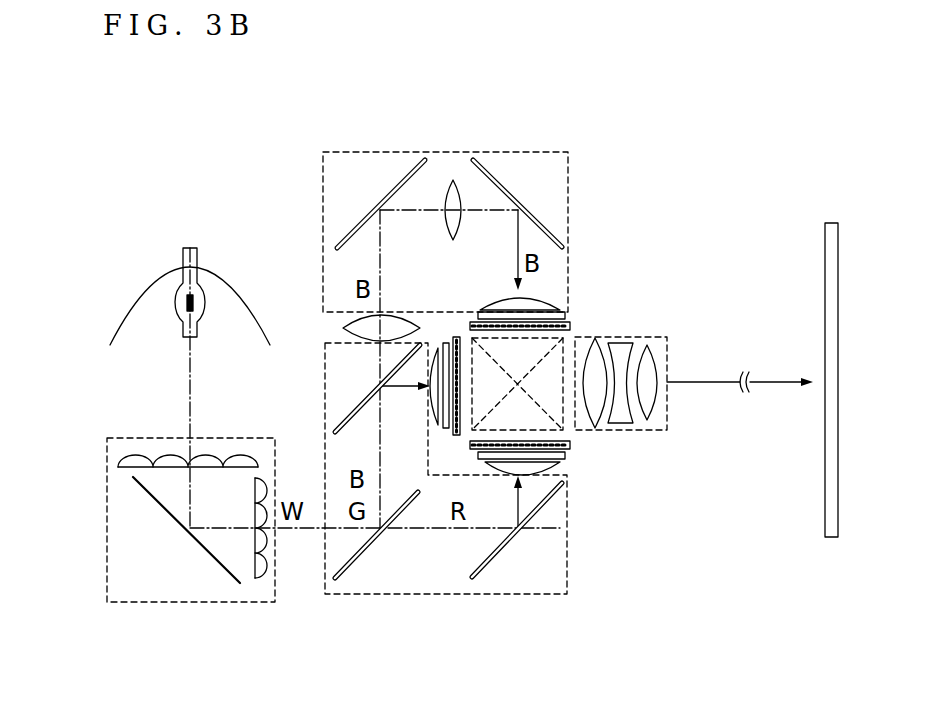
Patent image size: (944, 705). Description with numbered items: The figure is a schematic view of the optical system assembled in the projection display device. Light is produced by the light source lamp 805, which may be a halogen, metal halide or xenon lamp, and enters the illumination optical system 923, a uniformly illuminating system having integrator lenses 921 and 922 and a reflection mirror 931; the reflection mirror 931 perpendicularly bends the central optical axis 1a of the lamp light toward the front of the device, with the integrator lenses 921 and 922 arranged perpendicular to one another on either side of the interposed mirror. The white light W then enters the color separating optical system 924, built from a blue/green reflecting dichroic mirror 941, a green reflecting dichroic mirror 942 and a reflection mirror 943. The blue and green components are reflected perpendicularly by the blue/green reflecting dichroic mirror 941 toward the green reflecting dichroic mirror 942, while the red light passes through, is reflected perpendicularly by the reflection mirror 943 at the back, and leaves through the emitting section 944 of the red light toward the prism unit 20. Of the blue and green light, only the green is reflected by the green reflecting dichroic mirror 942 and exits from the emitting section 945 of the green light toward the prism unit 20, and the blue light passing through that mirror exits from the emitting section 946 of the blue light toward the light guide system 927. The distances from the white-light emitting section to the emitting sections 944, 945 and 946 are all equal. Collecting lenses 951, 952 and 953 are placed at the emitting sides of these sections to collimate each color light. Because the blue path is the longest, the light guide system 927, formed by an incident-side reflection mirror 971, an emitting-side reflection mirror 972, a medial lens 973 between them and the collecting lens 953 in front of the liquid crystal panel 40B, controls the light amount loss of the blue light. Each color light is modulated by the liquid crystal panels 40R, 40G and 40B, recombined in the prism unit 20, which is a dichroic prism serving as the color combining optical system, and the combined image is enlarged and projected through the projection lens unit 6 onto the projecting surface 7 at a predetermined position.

The light source lamp 805 is at (135, 293).
The central optical axis 1a is at (185, 413).
The integrator lens 921 is at (118, 466).
The integrator lens 922 is at (247, 587).
The illumination optical system 923 is at (102, 547).
The reflection mirror 931 is at (220, 572).
The light guide system 927 is at (345, 150).
The incident-side reflection mirror 971 is at (383, 205).
The emitting-side reflection mirror 972 is at (532, 212).
The medial lens 973 is at (452, 180).
The collecting lens 953 is at (543, 297).
The collecting lens 952 is at (437, 352).
The collecting lens 951 is at (568, 470).
The emitting section of the green color light 945 is at (432, 388).
The emitting section of the blue color light 946 is at (375, 345).
The liquid crystal panel 40G is at (457, 335).
The liquid crystal panel 40B is at (567, 320).
The liquid crystal panel 40R is at (570, 448).
The prism unit 20 is at (550, 362).
The projection lens unit 6 is at (645, 337).
The projecting surface 7 is at (835, 462).
The color separating optical system 924 is at (568, 588).
The blue/green reflecting dichroic mirror 941 is at (348, 580).
The green reflecting dichroic mirror 942 is at (345, 420).
The reflection mirror 943 is at (493, 563).
The emitting section of the red color light 944 is at (540, 503).